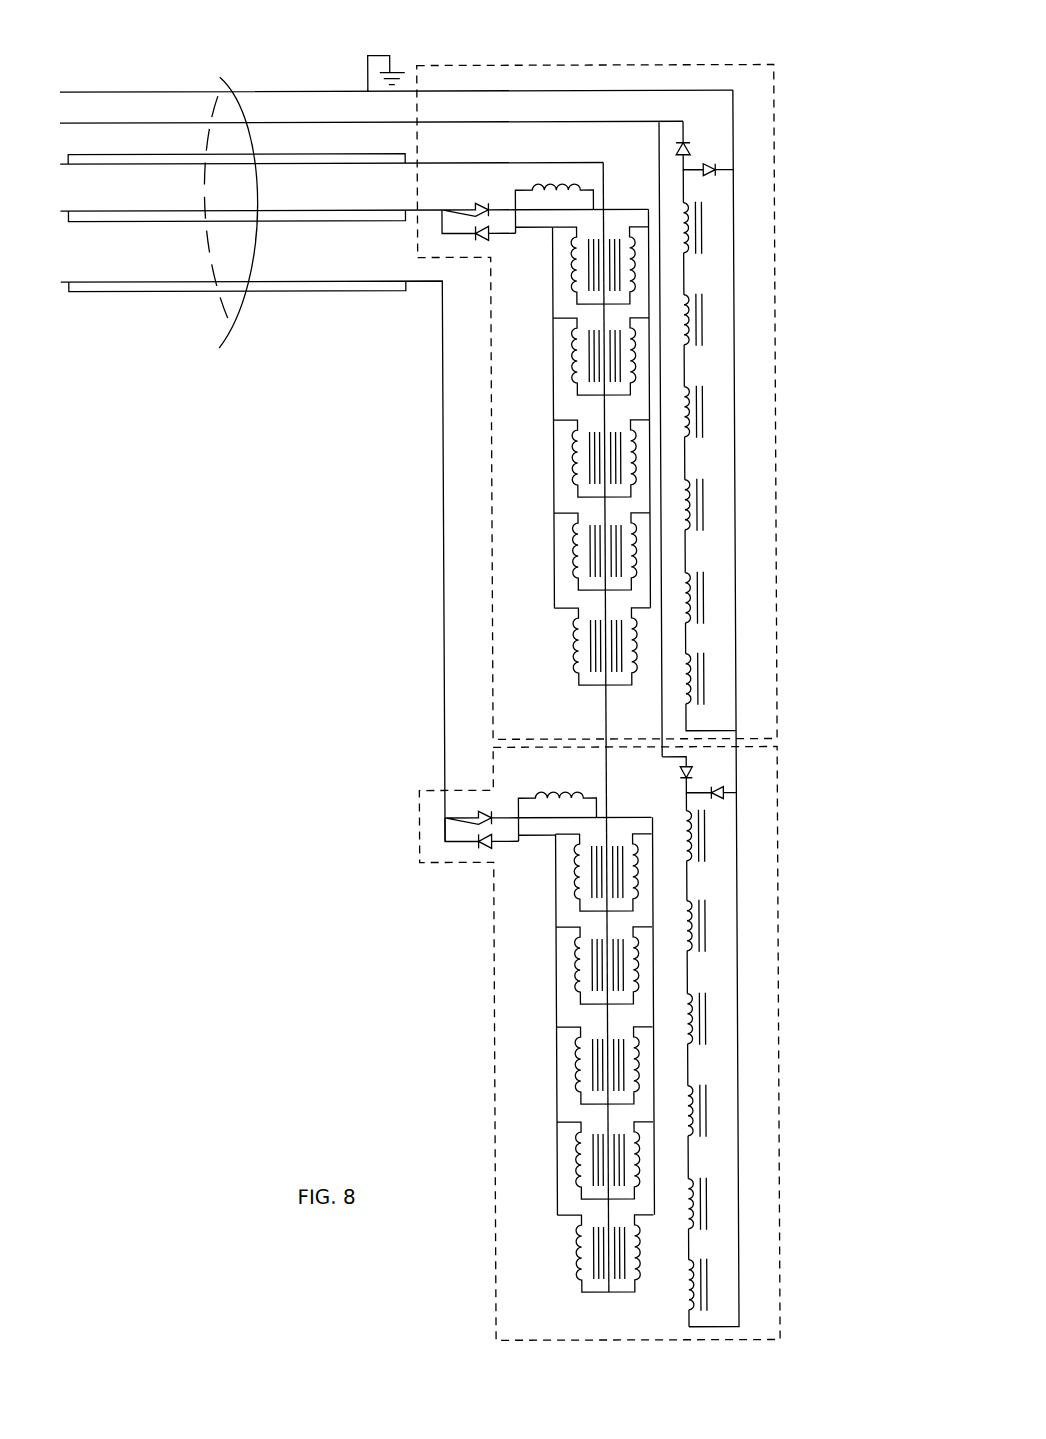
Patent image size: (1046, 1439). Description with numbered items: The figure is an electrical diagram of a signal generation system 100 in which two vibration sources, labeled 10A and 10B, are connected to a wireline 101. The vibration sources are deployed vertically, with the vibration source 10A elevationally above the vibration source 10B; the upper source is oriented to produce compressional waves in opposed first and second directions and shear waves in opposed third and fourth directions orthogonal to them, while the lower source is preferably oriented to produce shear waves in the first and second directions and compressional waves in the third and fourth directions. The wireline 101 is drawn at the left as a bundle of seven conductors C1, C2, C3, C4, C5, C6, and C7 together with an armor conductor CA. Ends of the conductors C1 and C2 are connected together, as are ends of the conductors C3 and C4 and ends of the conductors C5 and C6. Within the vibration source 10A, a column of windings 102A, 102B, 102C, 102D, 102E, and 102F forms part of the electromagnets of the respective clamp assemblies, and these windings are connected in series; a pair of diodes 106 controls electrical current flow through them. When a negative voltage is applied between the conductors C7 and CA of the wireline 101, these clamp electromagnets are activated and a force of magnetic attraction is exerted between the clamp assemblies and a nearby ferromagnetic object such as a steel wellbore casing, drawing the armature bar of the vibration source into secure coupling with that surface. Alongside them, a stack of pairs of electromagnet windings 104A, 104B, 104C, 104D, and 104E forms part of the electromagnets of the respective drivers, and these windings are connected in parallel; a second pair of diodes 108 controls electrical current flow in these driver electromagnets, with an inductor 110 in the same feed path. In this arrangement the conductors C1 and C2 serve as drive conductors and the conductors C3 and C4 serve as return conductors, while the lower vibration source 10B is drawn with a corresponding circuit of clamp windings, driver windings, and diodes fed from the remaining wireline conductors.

The vibration source 10A is at (560, 65).
The vibration source 10B is at (490, 940).
The signal generation system 100 is at (290, 441).
The wireline 101 is at (223, 226).
The pair of diodes 106 is at (710, 120).
The pair of diodes 108 is at (492, 252).
The inductor 110 is at (548, 183).
The winding 102A is at (703, 228).
The winding 102B is at (703, 320).
The winding 102C is at (703, 412).
The winding 102D is at (703, 505).
The winding 102E is at (703, 598).
The winding 102F is at (703, 679).
The pair of electromagnet windings 104A is at (551, 277).
The pair of electromagnet windings 104B is at (551, 372).
The pair of electromagnet windings 104C is at (551, 472).
The pair of electromagnet windings 104D is at (551, 563).
The pair of electromagnet windings 104E is at (551, 658).
The armor conductor CA is at (135, 90).
The conductor C1 is at (188, 221).
The conductor C2 is at (135, 209).
The conductor C3 is at (188, 165).
The conductor C4 is at (135, 153).
The conductor C5 is at (188, 291).
The conductor C6 is at (135, 280).
The conductor C7 is at (135, 121).